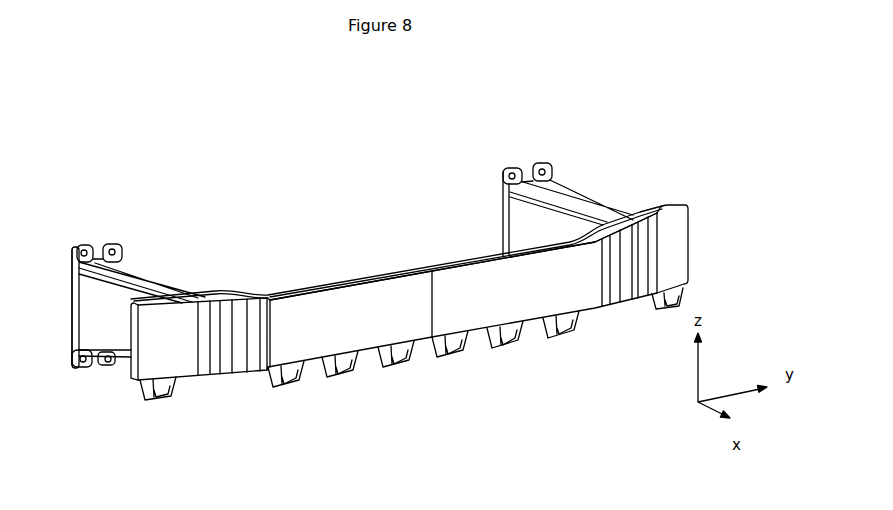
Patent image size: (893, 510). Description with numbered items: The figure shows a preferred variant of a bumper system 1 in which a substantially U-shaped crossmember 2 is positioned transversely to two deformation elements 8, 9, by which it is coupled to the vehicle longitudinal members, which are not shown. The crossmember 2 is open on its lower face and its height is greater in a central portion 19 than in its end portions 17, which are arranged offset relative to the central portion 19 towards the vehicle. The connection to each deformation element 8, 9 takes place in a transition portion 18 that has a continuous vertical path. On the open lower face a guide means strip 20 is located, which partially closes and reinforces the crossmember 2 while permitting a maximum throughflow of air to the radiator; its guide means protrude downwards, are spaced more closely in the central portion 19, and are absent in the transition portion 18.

The bumper assembly 1 is at (105, 392).
The crossmember 2 is at (680, 223).
The deformation element 8 is at (147, 232).
The deformation element 9 is at (580, 157).
The end portion 17 is at (685, 172).
The transition portion 18 is at (632, 187).
The central portion 19 is at (262, 270).
The guide means strip 20 is at (275, 372).